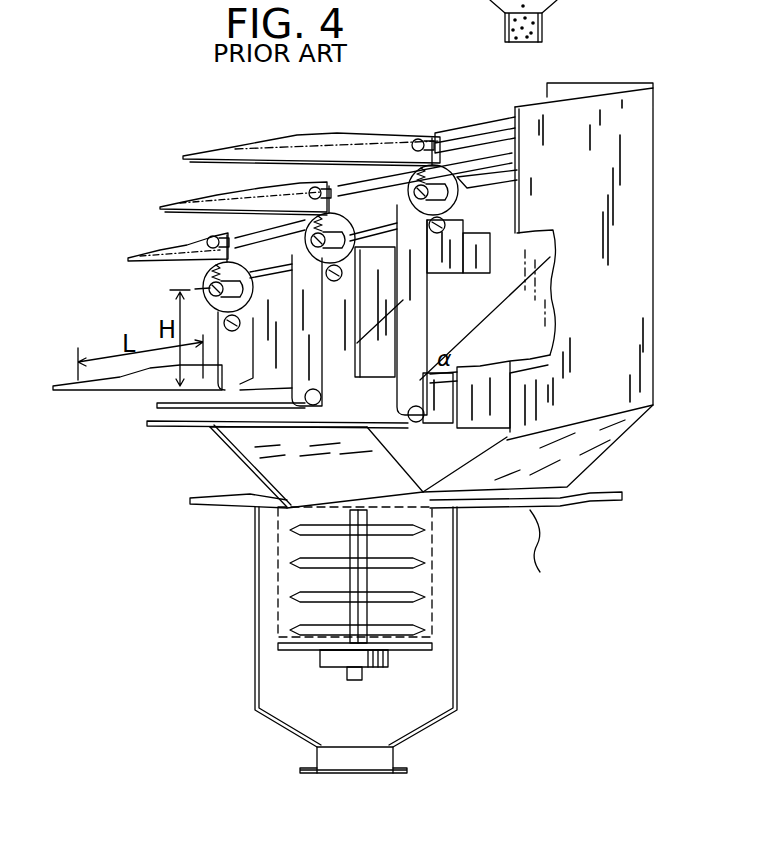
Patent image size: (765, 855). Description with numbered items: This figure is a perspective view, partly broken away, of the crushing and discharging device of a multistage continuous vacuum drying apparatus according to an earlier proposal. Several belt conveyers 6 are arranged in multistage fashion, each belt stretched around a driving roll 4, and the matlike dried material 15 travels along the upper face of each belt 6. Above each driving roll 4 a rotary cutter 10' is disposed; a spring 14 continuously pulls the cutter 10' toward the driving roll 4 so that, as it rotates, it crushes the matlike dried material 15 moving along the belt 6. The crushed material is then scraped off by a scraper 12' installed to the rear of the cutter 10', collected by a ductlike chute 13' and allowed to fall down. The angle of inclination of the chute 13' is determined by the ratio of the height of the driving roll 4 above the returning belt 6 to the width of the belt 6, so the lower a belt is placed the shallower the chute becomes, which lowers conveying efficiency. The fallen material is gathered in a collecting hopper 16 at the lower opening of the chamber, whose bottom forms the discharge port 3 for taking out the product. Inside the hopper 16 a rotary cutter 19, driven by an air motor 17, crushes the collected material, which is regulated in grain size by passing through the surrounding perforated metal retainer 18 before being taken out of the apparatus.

The discharge port 3 is at (545, 25).
The belt conveyer 6 is at (226, 150).
The matlike dried material 15 is at (345, 135).
The rotary cutter 10' is at (375, 161).
The spring 14 is at (447, 166).
The driving roll 4 is at (446, 202).
The scraper 12' is at (580, 261).
The ductlike chute 13' is at (524, 292).
The collecting hopper 16 is at (458, 620).
The perforated metal retainer 18 is at (278, 578).
The rotary cutter 19 is at (300, 655).
The air motor 17 is at (333, 662).